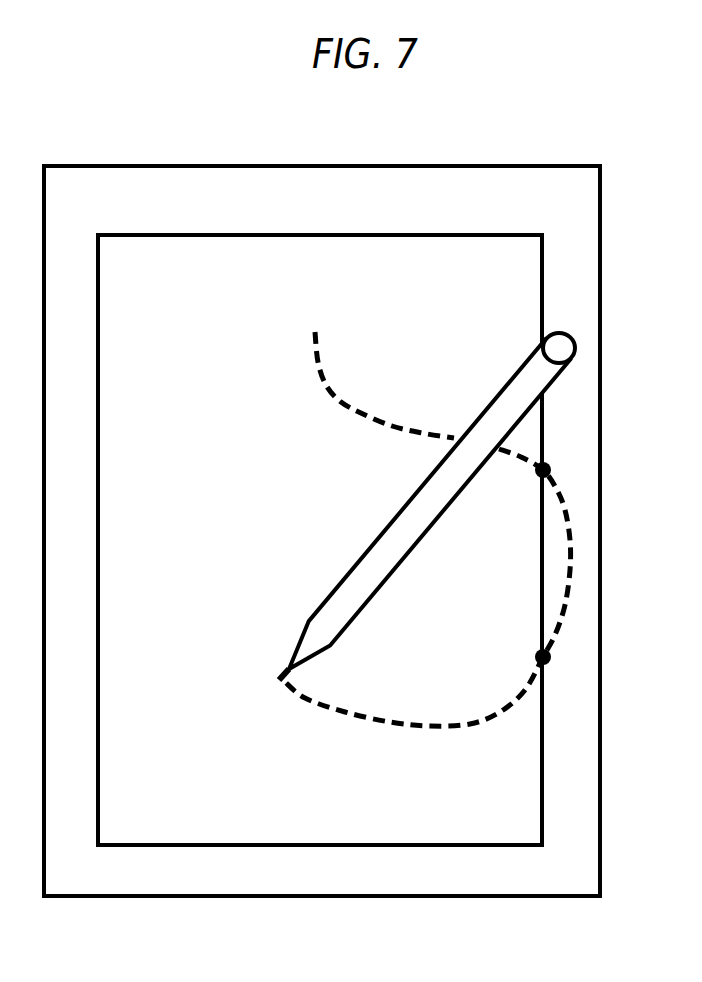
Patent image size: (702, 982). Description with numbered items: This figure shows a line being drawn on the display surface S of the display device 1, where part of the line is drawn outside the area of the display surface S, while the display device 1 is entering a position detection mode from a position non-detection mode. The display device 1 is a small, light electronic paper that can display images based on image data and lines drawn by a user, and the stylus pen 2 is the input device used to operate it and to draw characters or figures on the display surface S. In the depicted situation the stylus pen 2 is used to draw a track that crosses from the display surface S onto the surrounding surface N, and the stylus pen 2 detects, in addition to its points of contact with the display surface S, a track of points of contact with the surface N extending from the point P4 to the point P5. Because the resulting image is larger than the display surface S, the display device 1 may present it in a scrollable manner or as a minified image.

The display device 1 is at (440, 167).
The display surface S is at (544, 268).
The surface N is at (578, 315).
The stylus pen 2 is at (576, 349).
The point P4 is at (560, 456).
The point P5 is at (560, 674).